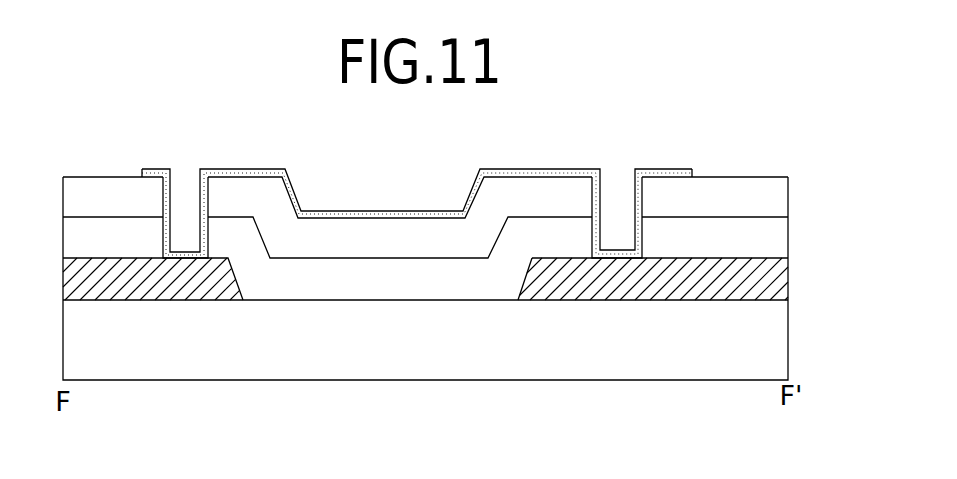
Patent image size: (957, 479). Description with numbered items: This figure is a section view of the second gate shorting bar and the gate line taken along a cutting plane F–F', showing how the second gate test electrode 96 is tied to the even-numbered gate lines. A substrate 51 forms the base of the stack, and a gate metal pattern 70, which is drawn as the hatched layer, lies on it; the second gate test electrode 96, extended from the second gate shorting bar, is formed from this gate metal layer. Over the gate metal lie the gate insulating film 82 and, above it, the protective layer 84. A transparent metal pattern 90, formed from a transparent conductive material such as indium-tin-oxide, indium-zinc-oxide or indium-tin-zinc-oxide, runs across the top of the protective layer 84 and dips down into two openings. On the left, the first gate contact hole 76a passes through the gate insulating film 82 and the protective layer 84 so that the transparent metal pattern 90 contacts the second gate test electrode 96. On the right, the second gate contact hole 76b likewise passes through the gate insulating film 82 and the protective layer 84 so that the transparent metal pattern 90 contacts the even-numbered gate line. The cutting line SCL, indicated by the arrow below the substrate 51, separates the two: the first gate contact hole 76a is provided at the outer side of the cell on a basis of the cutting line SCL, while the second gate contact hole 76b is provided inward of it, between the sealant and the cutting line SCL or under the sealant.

The insulating substrate 51 is at (788, 350).
The storage electrode line 70 is at (788, 275).
The gate insulating film 82 is at (788, 240).
The protective layer 84 is at (788, 197).
The transparent metal pattern 90 is at (677, 168).
The first gate contact hole 76a is at (183, 190).
The second gate contact hole 76b is at (617, 185).
The second gate test electrode 96 is at (140, 300).
The cutting line SCL is at (449, 380).